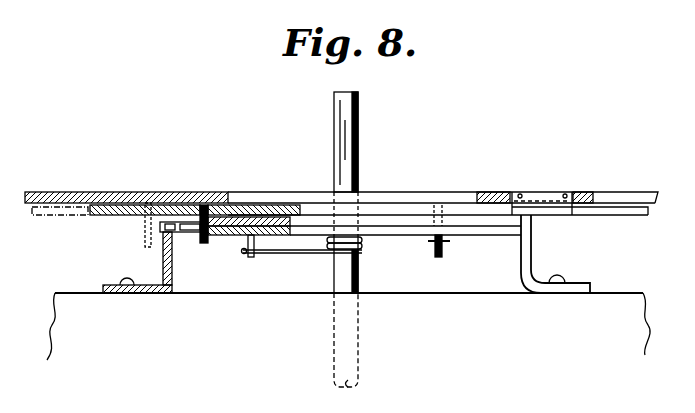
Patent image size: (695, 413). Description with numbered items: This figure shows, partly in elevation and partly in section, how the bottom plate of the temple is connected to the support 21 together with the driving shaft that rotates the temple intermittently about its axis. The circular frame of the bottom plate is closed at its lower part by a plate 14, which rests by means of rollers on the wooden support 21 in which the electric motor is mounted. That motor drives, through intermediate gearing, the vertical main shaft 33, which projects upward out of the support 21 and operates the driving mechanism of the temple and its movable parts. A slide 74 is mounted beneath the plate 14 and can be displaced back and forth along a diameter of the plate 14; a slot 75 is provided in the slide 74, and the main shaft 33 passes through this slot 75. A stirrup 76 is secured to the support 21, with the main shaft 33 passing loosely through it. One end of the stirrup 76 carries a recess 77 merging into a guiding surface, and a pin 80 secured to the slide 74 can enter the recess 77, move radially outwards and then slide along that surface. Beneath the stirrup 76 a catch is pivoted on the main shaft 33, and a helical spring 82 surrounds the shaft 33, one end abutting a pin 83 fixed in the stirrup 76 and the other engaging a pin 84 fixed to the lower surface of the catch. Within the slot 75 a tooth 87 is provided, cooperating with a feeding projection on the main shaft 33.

The plate 14 is at (68, 192).
The support 21 is at (612, 293).
The main shaft 33 is at (352, 348).
The slide 74 is at (128, 217).
The slot 75 is at (384, 206).
The stirrup 76 is at (527, 261).
The recess 77 is at (167, 218).
The pin 80 is at (148, 248).
The helical spring 82 is at (306, 253).
The pin 83 is at (449, 236).
The pin 84 is at (252, 258).
The tooth 87 is at (229, 237).